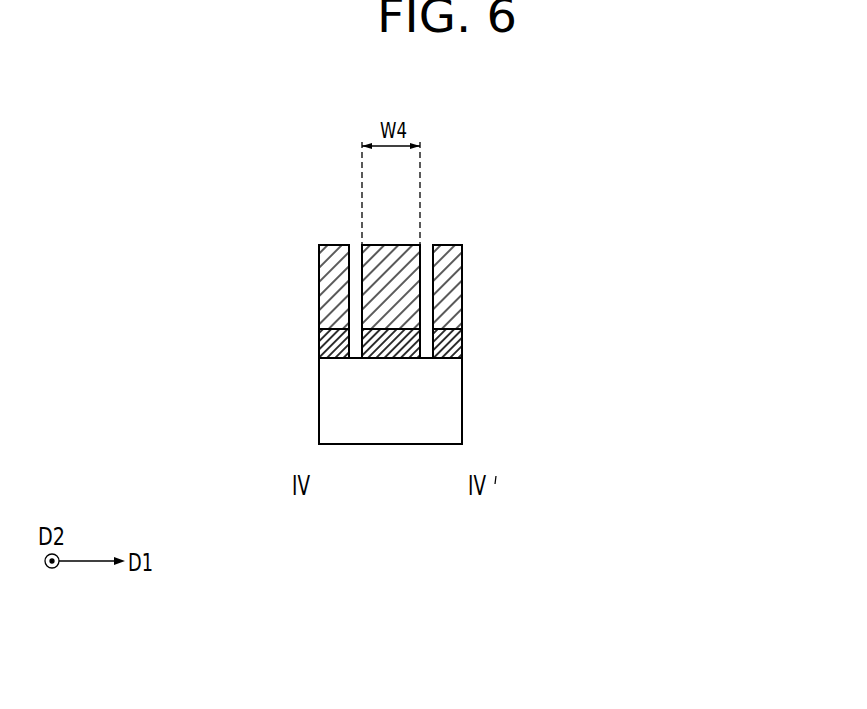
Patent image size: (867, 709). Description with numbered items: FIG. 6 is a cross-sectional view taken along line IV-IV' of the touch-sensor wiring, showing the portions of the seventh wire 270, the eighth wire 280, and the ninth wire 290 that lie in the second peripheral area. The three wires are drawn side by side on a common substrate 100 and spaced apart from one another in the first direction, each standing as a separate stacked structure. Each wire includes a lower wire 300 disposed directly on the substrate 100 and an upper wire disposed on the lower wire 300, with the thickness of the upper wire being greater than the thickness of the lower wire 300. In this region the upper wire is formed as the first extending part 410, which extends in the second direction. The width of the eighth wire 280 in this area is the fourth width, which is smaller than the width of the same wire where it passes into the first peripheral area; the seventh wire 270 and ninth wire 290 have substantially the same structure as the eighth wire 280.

The substrate 100 is at (462, 400).
The seventh wire 270 is at (324, 234).
The eighth wire 280 is at (381, 232).
The ninth wire 290 is at (460, 232).
The lower wire 300 is at (385, 358).
The first extending part 410 is at (414, 291).